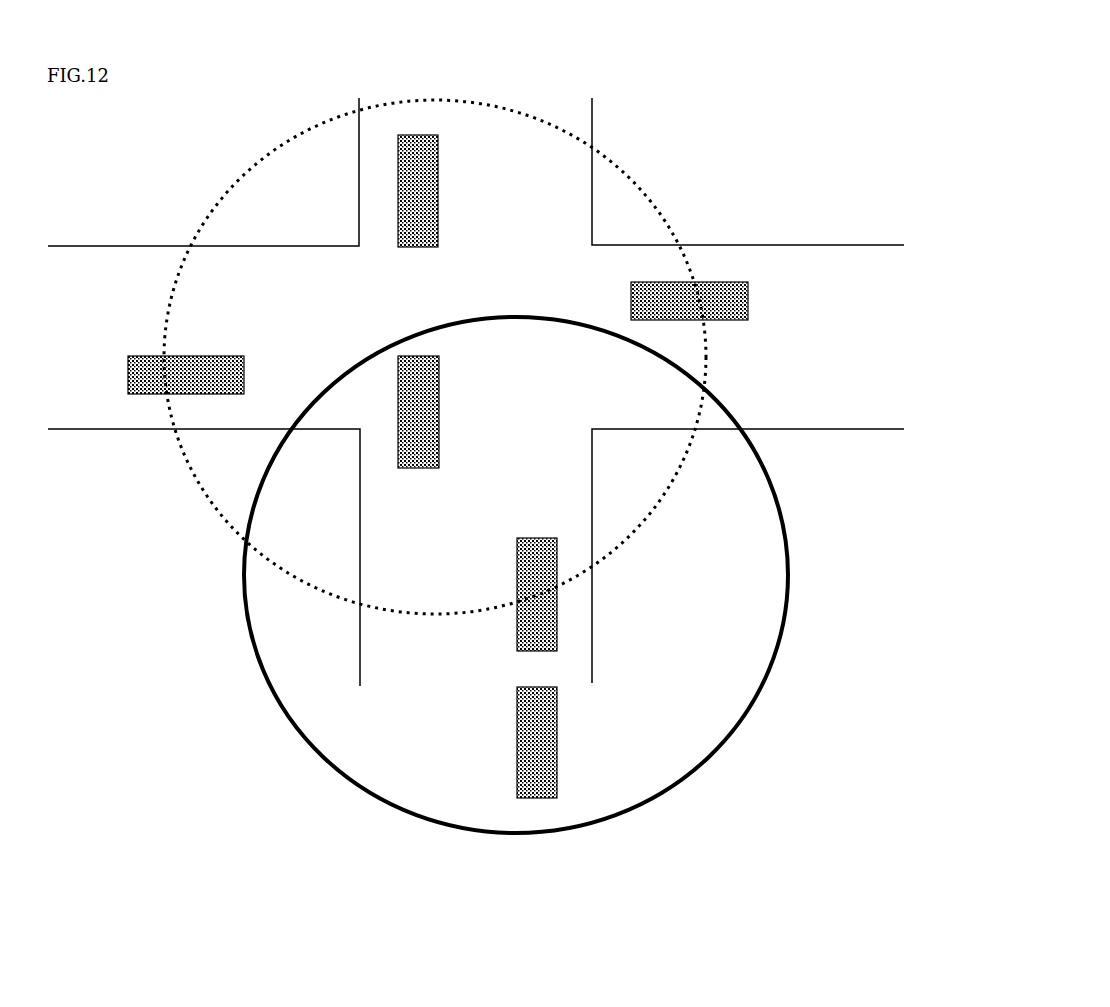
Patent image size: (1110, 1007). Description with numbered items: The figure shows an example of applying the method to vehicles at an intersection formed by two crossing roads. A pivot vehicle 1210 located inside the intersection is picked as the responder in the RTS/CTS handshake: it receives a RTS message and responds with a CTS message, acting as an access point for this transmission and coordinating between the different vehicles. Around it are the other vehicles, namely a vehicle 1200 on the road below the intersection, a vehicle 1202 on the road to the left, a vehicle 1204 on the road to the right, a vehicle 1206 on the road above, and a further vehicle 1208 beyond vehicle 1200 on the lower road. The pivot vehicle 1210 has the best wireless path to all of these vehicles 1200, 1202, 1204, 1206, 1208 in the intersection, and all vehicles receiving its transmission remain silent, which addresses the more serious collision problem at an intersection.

The vehicle 1200 is at (559, 594).
The vehicle 1202 is at (186, 376).
The vehicle 1204 is at (689, 301).
The vehicle 1206 is at (440, 190).
The vehicle 1208 is at (559, 742).
The pivot vehicle 1210 is at (442, 412).